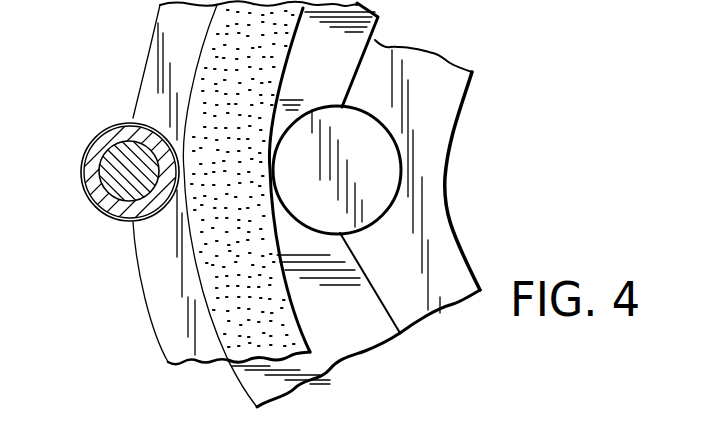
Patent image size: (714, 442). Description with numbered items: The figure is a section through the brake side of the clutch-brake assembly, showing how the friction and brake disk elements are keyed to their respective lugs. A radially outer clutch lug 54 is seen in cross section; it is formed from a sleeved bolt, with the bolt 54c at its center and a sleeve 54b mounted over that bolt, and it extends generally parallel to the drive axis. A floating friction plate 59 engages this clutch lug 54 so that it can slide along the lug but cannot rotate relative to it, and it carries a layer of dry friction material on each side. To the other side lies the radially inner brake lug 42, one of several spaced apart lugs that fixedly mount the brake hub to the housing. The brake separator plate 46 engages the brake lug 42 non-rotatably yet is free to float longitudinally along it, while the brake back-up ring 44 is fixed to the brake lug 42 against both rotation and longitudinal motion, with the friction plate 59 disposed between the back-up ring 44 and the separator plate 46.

The brake lug 42 is at (380, 177).
The brake back-up ring 44 is at (432, 113).
The brake separator plate 46 is at (342, 50).
The clutch lug 54 is at (117, 165).
The sleeve 54b is at (93, 196).
The bolt 54c is at (119, 208).
The floating friction plate 59 is at (153, 55).